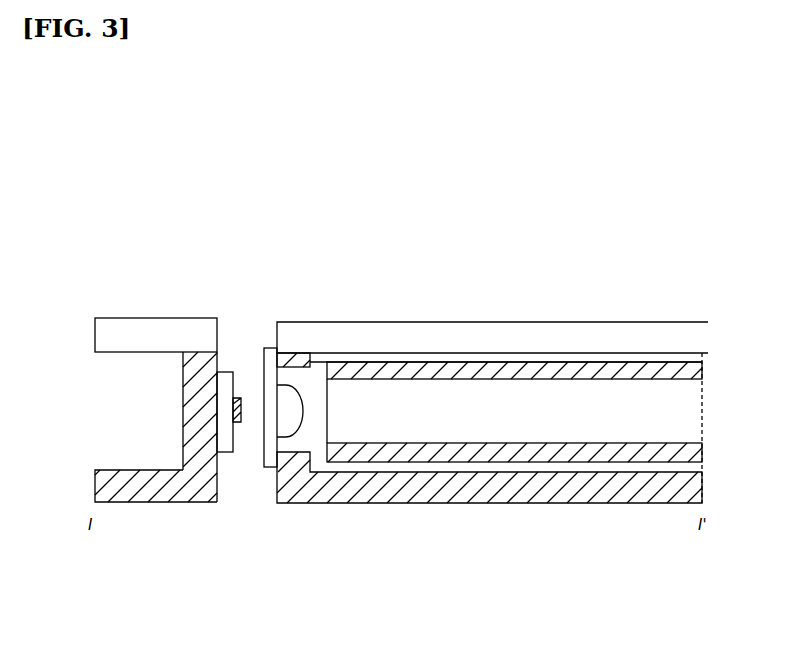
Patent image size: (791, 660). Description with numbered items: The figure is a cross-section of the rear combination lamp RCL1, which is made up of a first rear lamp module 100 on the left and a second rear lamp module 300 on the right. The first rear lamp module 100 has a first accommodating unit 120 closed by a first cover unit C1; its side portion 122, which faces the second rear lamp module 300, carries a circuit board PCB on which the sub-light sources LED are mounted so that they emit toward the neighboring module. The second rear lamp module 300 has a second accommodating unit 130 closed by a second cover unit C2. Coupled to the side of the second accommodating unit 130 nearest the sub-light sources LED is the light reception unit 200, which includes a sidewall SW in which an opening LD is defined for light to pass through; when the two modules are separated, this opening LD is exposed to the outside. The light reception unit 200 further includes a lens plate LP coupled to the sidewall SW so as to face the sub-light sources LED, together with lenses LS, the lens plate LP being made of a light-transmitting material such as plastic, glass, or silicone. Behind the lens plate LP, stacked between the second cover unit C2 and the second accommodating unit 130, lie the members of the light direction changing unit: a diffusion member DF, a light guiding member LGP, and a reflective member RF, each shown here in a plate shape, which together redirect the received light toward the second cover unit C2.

The first rear lamp module 100 is at (187, 427).
The first accommodating unit 120 is at (135, 494).
The side portion 122 is at (189, 405).
The second accommodating unit 130 is at (700, 486).
The light reception unit 200 is at (483, 326).
The second rear lamp module 300 is at (520, 416).
The first cover unit C1 is at (146, 330).
The second cover unit C2 is at (683, 333).
The circuit board PCB is at (227, 372).
The sub-light sources LED is at (242, 406).
The lens plate LP is at (288, 405).
The lenses LS is at (296, 362).
The sidewall SW is at (311, 358).
The opening LD is at (300, 445).
The diffusion member DF is at (698, 368).
The light guiding member LGP is at (700, 410).
The reflective member RF is at (700, 450).
The rear combination lamp RCL1 is at (621, 182).